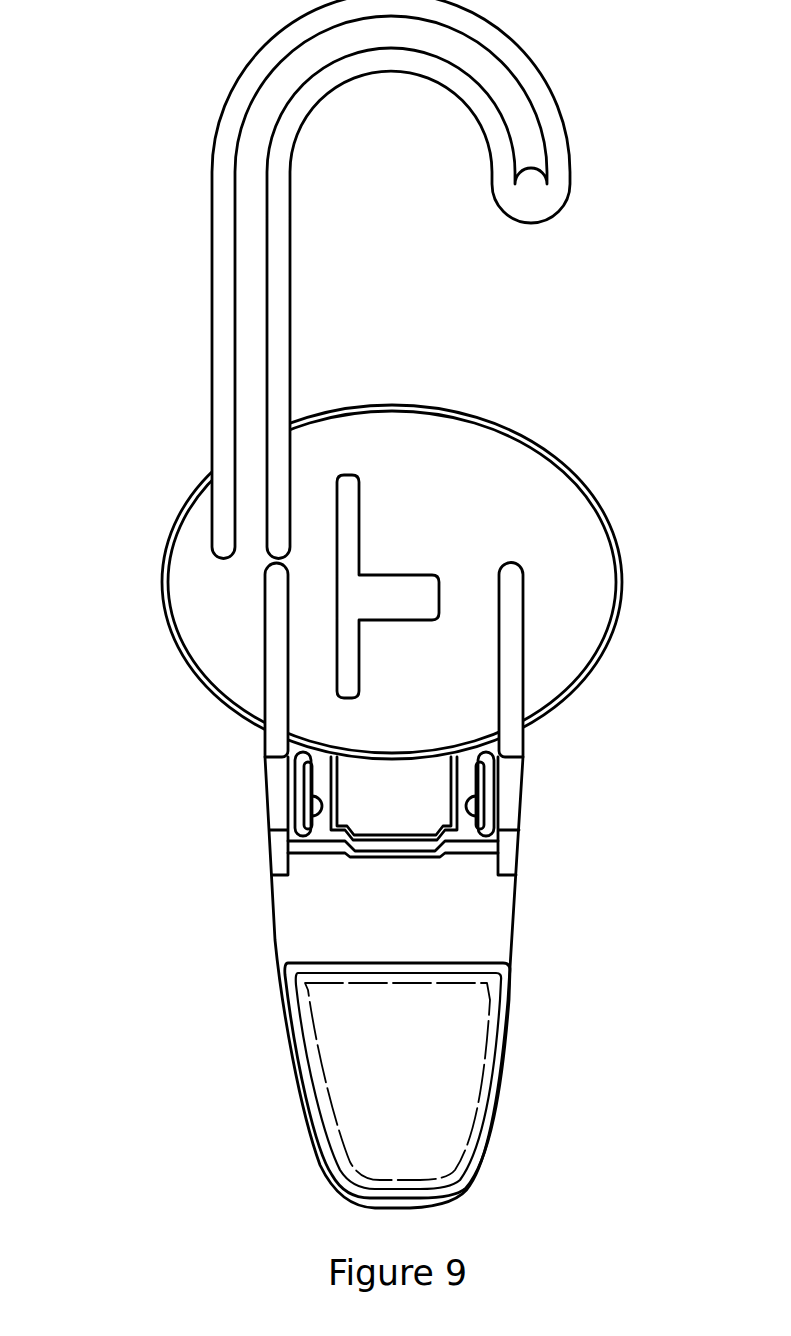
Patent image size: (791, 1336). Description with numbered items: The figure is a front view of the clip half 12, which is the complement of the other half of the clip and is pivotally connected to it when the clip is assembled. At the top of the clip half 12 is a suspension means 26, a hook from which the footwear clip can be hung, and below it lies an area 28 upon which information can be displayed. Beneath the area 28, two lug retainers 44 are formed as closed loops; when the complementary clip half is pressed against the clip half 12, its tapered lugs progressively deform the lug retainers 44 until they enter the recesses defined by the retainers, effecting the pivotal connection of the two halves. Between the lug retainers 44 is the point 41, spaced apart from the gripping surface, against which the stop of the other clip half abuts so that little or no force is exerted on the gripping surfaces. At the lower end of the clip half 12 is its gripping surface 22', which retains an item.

The suspension means 26 is at (217, 130).
The area upon which information can be displayed 28 is at (161, 577).
The lug retainers 44 is at (280, 814).
The clip half 12 is at (274, 914).
The point 41 is at (440, 853).
The gripping surface 22' is at (470, 1080).